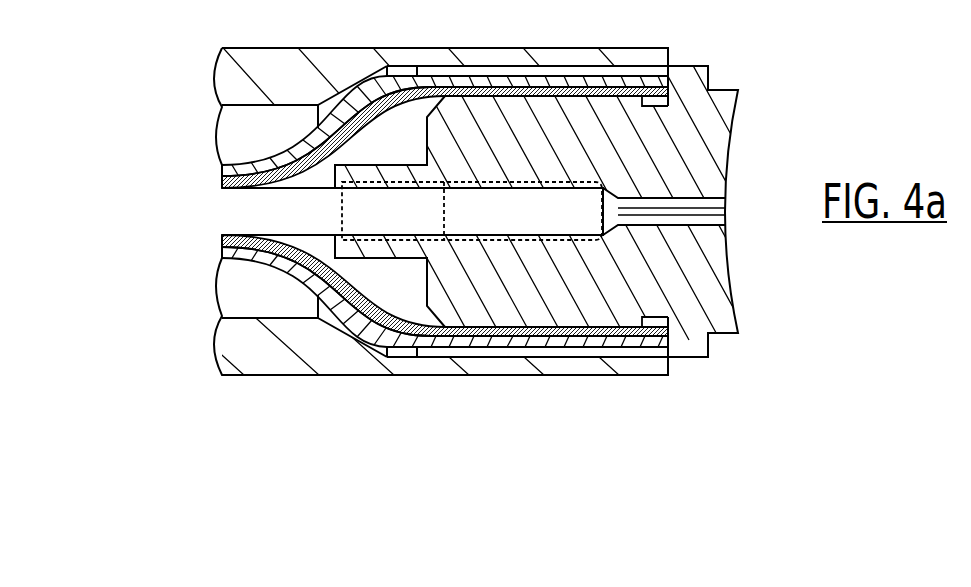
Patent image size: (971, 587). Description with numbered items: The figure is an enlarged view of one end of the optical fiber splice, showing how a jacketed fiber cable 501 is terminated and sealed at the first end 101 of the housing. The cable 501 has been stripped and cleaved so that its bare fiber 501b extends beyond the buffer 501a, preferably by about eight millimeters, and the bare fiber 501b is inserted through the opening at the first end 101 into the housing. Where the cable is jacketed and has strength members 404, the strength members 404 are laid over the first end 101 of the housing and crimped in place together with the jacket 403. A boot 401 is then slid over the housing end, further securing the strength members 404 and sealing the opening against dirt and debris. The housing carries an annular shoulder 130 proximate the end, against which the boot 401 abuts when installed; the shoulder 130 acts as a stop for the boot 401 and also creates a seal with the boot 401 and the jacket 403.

The boot 401 is at (580, 48).
The annular shoulder 130 is at (696, 76).
The jacket 403 is at (668, 84).
The strength members 404 is at (657, 107).
The cable 501 is at (295, 217).
The buffer 501a is at (367, 222).
The bare fiber 501b is at (697, 212).
The first end 101 is at (488, 305).